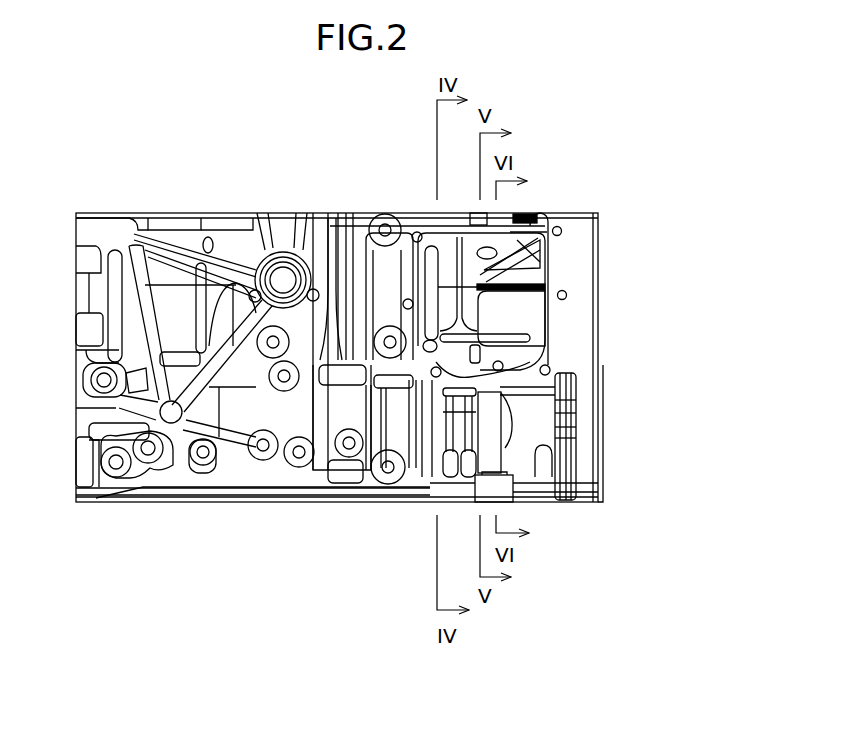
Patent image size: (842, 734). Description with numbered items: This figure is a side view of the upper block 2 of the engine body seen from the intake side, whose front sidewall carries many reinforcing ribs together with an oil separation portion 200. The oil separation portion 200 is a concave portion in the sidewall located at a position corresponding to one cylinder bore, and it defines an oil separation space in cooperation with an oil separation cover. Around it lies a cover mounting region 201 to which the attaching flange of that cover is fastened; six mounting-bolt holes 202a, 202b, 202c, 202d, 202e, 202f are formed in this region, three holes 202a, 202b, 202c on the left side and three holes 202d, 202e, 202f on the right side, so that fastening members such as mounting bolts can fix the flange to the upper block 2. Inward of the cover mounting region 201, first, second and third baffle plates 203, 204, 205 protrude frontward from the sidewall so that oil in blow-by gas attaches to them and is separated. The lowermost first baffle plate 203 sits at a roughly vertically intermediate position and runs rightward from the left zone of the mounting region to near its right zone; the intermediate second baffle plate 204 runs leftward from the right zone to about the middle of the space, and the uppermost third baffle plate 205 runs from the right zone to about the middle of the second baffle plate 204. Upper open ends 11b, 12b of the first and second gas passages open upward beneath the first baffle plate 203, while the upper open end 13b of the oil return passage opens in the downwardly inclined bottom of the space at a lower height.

The upper block 2 is at (108, 200).
The upper open end of the first gas passage 11b is at (416, 348).
The upper open end of the second gas passage 12b is at (470, 300).
The upper open end of the oil return passage 13b is at (520, 403).
The oil separation portion 200 is at (556, 339).
The cover mounting region 201 is at (530, 232).
The mounting-bolt hole 202a is at (415, 232).
The mounting-bolt hole 202b is at (403, 301).
The mounting-bolt hole 202c is at (436, 377).
The mounting-bolt hole 202d is at (550, 372).
The mounting-bolt hole 202e is at (567, 296).
The mounting-bolt hole 202f is at (562, 231).
The first baffle plate 203 is at (522, 345).
The second baffle plate 204 is at (545, 285).
The third baffle plate 205 is at (545, 257).